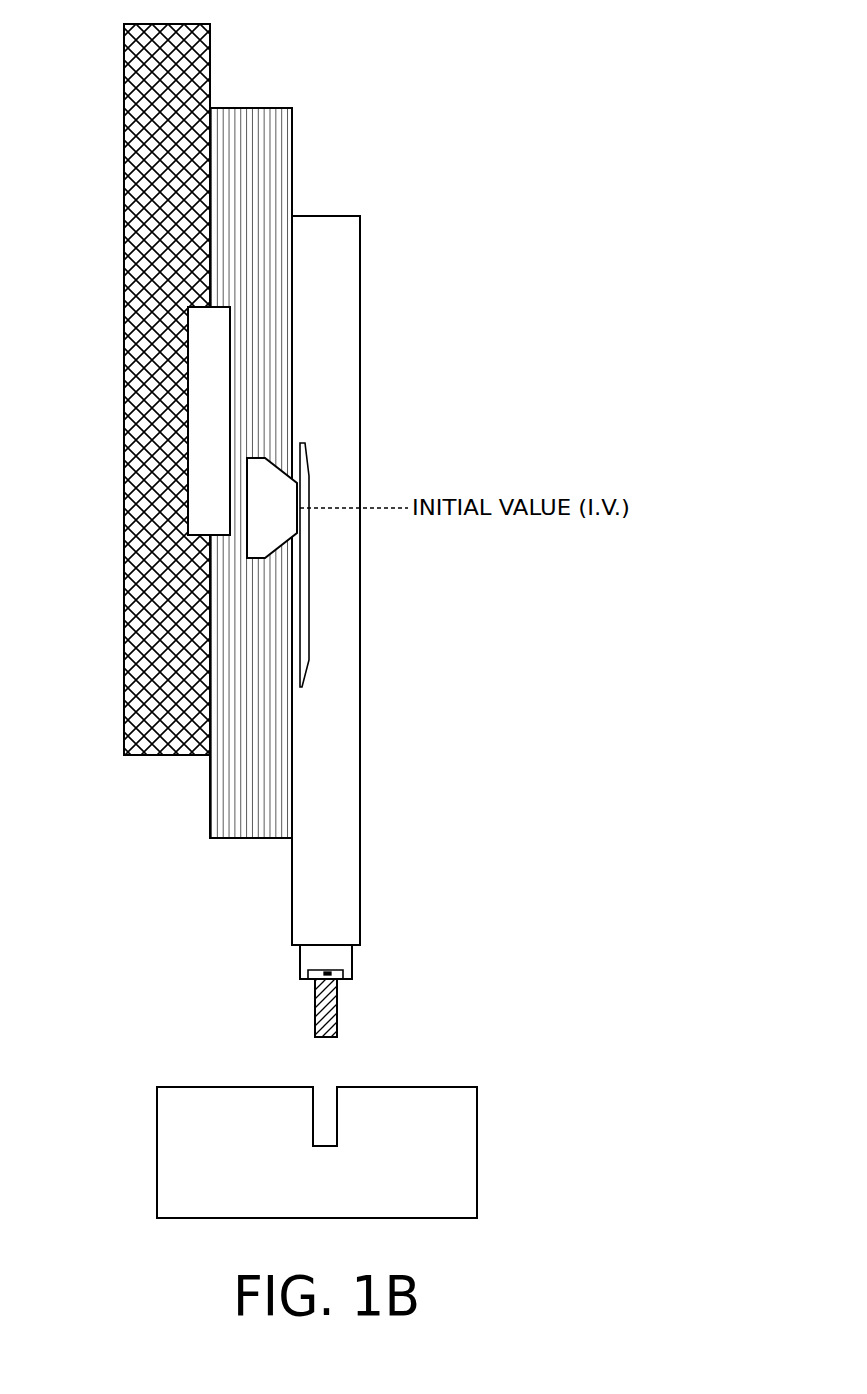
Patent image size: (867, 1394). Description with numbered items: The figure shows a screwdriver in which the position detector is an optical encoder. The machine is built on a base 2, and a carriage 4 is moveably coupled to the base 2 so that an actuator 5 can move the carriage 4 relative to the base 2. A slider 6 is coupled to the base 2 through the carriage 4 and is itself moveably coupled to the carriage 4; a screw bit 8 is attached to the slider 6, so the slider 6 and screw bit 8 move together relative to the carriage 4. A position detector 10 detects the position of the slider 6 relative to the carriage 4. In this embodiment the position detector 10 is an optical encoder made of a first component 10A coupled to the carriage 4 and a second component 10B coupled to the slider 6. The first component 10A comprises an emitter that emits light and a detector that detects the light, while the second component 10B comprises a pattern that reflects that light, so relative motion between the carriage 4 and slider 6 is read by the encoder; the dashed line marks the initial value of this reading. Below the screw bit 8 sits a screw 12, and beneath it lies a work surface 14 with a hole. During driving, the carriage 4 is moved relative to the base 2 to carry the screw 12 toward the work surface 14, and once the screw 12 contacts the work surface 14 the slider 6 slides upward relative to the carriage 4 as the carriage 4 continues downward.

The base 2 is at (124, 70).
The carriage 4 is at (293, 137).
The actuator 5 is at (183, 302).
The slider 6 is at (360, 262).
The screw bit 8 is at (352, 958).
The position detector 10 is at (335, 505).
The first component 10A is at (292, 517).
The second component 10B is at (308, 481).
The screw 12 is at (337, 1009).
The work surface 14 is at (477, 1118).